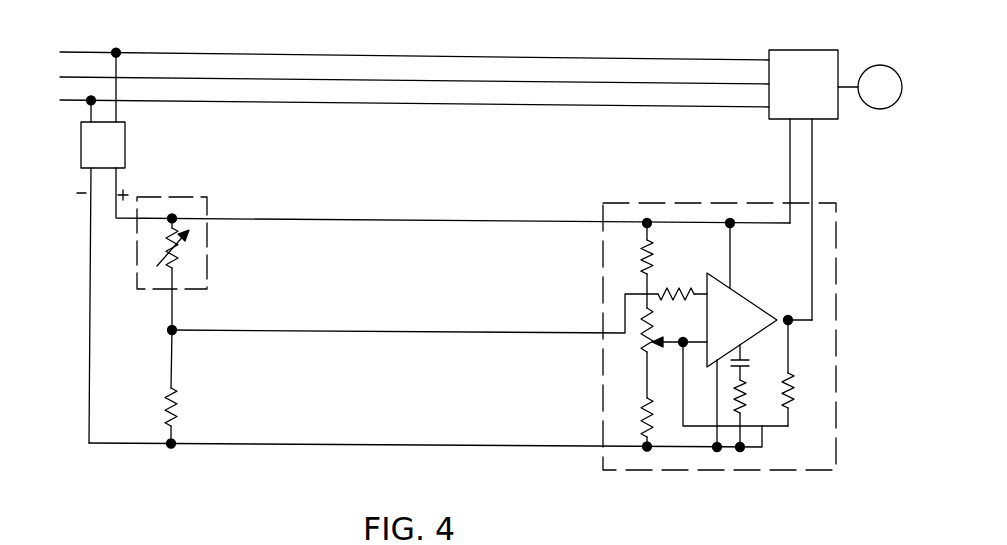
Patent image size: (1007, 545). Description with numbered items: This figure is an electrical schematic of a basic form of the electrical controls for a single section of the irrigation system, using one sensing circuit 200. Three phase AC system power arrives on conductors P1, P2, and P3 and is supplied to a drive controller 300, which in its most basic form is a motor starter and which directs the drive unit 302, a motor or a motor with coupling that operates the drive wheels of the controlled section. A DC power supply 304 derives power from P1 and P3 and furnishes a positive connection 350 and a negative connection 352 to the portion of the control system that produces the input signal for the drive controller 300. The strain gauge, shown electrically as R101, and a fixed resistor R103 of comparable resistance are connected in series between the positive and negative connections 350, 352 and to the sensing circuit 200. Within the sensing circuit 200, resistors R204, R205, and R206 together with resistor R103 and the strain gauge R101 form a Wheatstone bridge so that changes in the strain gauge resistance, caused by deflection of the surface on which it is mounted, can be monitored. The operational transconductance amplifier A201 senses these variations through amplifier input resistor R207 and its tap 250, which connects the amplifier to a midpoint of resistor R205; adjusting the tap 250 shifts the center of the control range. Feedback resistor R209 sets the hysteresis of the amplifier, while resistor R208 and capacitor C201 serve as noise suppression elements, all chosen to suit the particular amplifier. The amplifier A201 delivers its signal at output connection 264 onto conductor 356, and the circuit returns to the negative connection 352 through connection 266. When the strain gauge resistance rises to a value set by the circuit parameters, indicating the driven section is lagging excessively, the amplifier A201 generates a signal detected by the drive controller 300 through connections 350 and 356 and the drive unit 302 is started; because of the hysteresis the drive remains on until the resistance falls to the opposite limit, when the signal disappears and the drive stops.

The sensing circuit 200 is at (718, 350).
The tap 250 is at (669, 348).
The output connection 264 is at (782, 318).
The connection to the negative DC connection 266 is at (765, 442).
The drive controller 300 is at (801, 59).
The drive unit 302 is at (876, 122).
The DC power supply 304 is at (155, 117).
The positive connection 350 is at (118, 178).
The negative connection 352 is at (88, 184).
The conductor 356 is at (812, 182).
The conductor P1 is at (401, 100).
The conductor P2 is at (401, 77).
The conductor P3 is at (401, 52).
The strain gauge R101 is at (211, 263).
The fixed resistor R103 is at (191, 389).
The resistor R204 is at (668, 265).
The resistor R205 is at (666, 353).
The resistor R206 is at (628, 424).
The amplifier input resistor R207 is at (682, 286).
The resistor R208 is at (748, 382).
The feedback resistor R209 is at (807, 373).
The capacitor C201 is at (751, 361).
The operational transconductance amplifier A201 is at (753, 328).